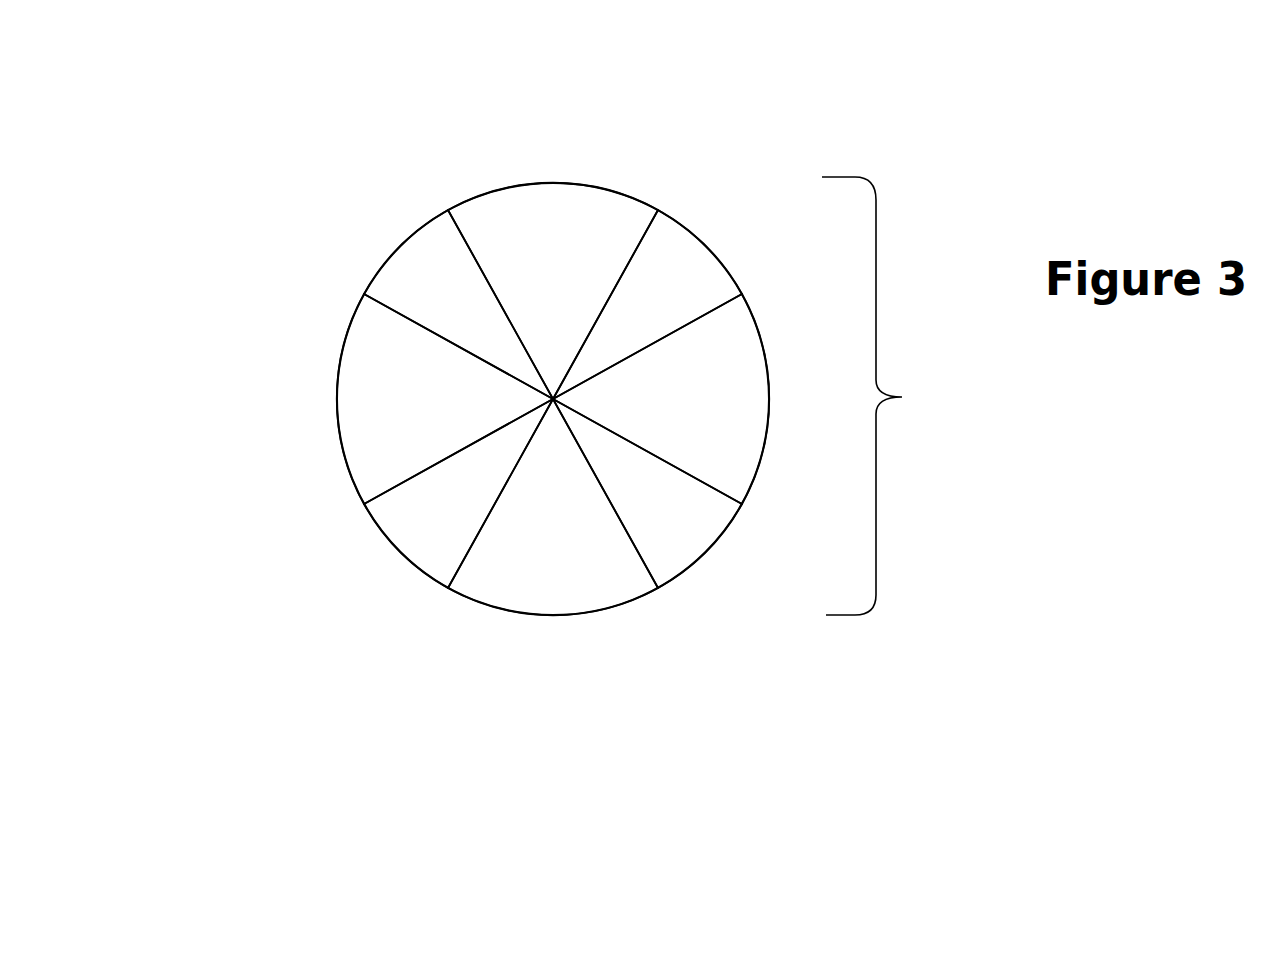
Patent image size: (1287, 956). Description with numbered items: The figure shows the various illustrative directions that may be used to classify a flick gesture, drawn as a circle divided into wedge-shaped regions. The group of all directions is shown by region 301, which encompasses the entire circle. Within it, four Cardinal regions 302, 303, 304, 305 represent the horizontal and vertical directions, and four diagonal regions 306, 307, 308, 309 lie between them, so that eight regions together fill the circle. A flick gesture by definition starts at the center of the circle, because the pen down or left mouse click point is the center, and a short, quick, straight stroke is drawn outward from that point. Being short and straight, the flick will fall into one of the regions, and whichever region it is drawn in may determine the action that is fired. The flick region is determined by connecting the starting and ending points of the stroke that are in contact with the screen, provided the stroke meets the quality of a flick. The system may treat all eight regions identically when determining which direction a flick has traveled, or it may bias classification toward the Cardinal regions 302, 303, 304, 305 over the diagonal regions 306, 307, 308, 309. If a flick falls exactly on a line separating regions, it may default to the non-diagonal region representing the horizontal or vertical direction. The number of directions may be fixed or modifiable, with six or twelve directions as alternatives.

The region of all directions 301 is at (680, 396).
The Cardinal region 302 is at (553, 223).
The Cardinal region 303 is at (743, 397).
The Cardinal region 304 is at (387, 402).
The Cardinal region 305 is at (555, 577).
The diagonal region 306 is at (658, 290).
The diagonal region 307 is at (665, 537).
The diagonal region 308 is at (420, 280).
The diagonal region 309 is at (417, 530).